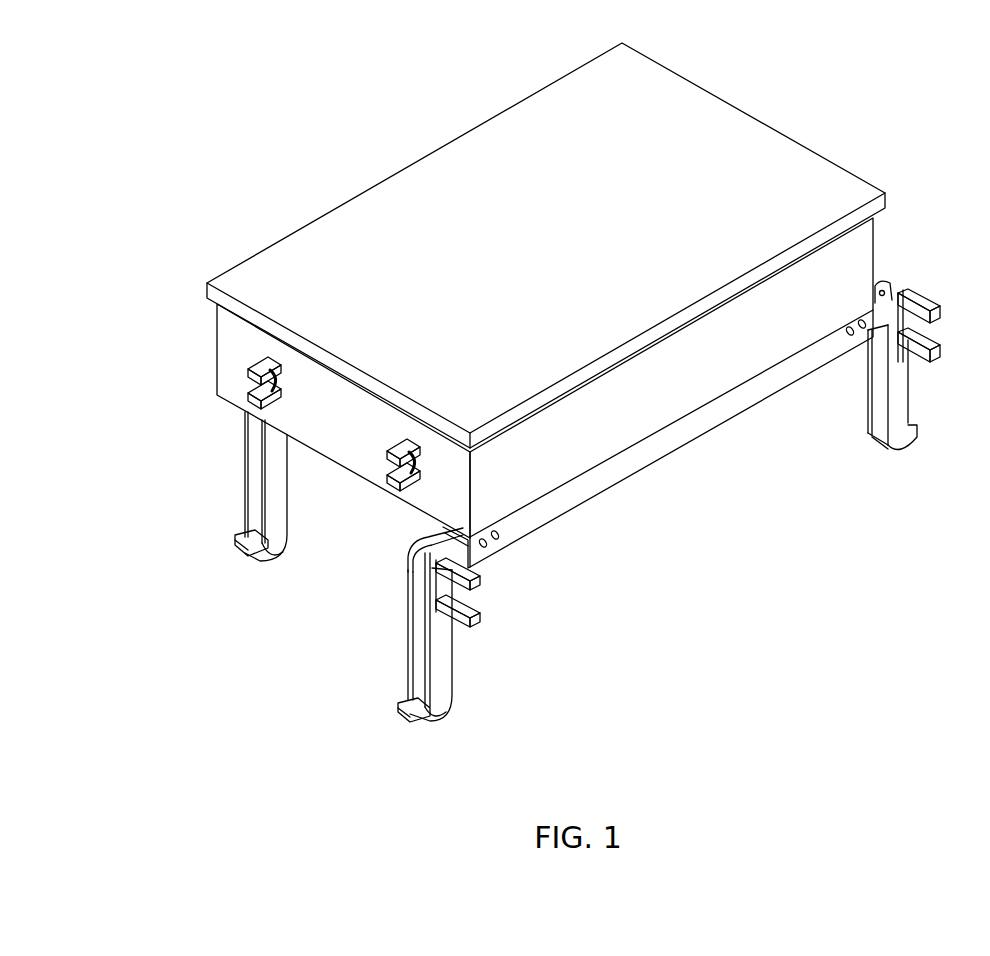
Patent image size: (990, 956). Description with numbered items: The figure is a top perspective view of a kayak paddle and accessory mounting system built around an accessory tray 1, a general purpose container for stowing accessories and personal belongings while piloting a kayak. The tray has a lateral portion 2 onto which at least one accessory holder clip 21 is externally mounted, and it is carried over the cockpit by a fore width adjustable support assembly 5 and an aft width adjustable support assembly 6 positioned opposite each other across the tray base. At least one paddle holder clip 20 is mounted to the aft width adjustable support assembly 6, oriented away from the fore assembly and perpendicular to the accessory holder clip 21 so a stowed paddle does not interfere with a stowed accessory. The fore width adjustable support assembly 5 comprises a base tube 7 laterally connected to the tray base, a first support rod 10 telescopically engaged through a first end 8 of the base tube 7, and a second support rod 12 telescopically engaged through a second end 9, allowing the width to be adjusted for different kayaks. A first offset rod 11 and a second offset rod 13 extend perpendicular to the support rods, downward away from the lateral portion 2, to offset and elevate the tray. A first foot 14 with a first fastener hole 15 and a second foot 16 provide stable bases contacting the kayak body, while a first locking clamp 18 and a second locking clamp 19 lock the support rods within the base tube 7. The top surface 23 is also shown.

The accessory tray 1 is at (186, 354).
The lateral portion 2 is at (336, 421).
The fore width adjustable support assembly 5 is at (299, 474).
The aft width adjustable support assembly 6 is at (472, 651).
The base tube 7 is at (707, 427).
The first end 8 is at (452, 530).
The second end 9 is at (871, 312).
The first support rod 10 is at (423, 549).
The first offset rod 11 is at (252, 470).
The second support rod 12 is at (880, 291).
The second offset rod 13 is at (904, 384).
The first foot 14 is at (266, 552).
The first fastener hole 15 is at (247, 535).
The second foot 16 is at (906, 443).
The first locking clamp 18 is at (487, 545).
The second locking clamp 19 is at (851, 336).
The paddle holder clip 20 is at (481, 620).
The accessory holder clip 21 is at (264, 366).
The table top 23 is at (437, 153).